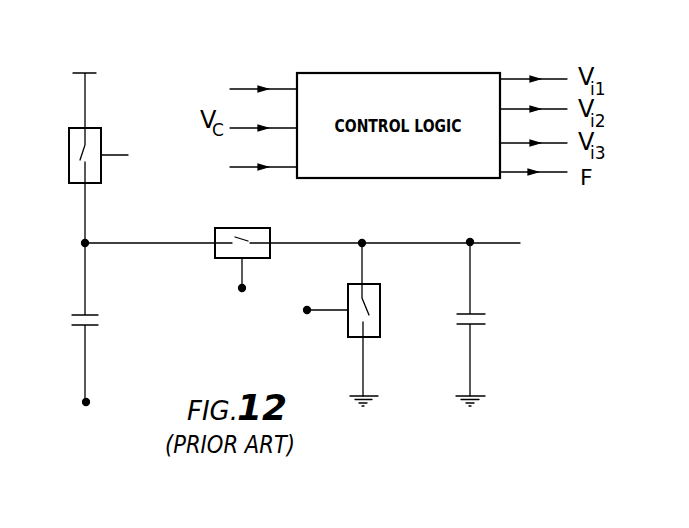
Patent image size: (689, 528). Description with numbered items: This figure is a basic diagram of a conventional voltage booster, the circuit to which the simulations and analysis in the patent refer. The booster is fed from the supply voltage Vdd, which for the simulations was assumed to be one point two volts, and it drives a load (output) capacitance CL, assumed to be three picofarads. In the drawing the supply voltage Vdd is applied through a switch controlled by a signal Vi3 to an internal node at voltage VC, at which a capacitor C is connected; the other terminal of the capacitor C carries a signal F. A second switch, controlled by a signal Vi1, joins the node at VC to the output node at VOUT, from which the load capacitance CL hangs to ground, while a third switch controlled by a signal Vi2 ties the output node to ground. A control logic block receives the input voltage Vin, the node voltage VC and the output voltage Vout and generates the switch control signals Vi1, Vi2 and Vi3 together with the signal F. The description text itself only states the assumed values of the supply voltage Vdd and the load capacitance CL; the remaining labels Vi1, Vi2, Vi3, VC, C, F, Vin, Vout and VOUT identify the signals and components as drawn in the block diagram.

The supply voltage Vdd is at (85, 83).
The third switch controlled by Vi3 is at (115, 185).
The capacitor voltage node VC is at (149, 225).
The capacitor C is at (98, 322).
The flag output terminal F is at (97, 404).
The first switch controlled by Vi1 is at (288, 269).
The second switch controlled by Vi2 is at (329, 323).
The output voltage node VOUT is at (456, 224).
The load (output) capacitance CL is at (486, 324).
The input voltage signal Vin is at (209, 84).
The output voltage feedback signal Vout is at (205, 163).